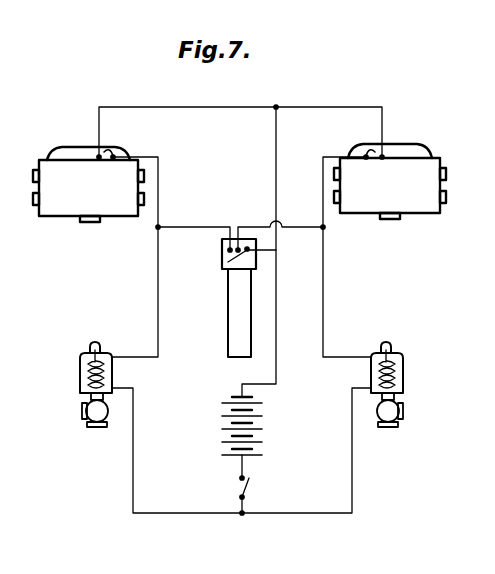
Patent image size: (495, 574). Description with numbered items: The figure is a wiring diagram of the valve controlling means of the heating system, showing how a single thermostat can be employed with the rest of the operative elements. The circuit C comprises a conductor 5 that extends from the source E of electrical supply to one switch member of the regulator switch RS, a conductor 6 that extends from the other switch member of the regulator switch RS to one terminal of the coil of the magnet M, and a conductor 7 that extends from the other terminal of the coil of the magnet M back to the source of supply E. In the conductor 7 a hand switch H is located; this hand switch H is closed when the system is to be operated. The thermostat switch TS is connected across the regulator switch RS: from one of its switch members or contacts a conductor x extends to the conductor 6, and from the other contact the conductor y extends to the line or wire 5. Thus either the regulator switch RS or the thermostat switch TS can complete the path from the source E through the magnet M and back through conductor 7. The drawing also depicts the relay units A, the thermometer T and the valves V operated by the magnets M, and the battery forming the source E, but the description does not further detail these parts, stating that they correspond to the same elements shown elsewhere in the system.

The conductor 5 is at (288, 312).
The conductor 6 is at (152, 157).
The conductor 7 is at (133, 485).
The relay or magnet box A is at (239, 183).
The regulator switch RS is at (105, 151).
The conductor x is at (200, 227).
The conductor y is at (266, 252).
The thermostat switch TS is at (228, 258).
The thermometer T is at (228, 272).
The magnet M is at (80, 368).
The valve V is at (82, 413).
The circuit C is at (165, 454).
The source of electrical supply E is at (258, 437).
The hand switch H is at (256, 487).